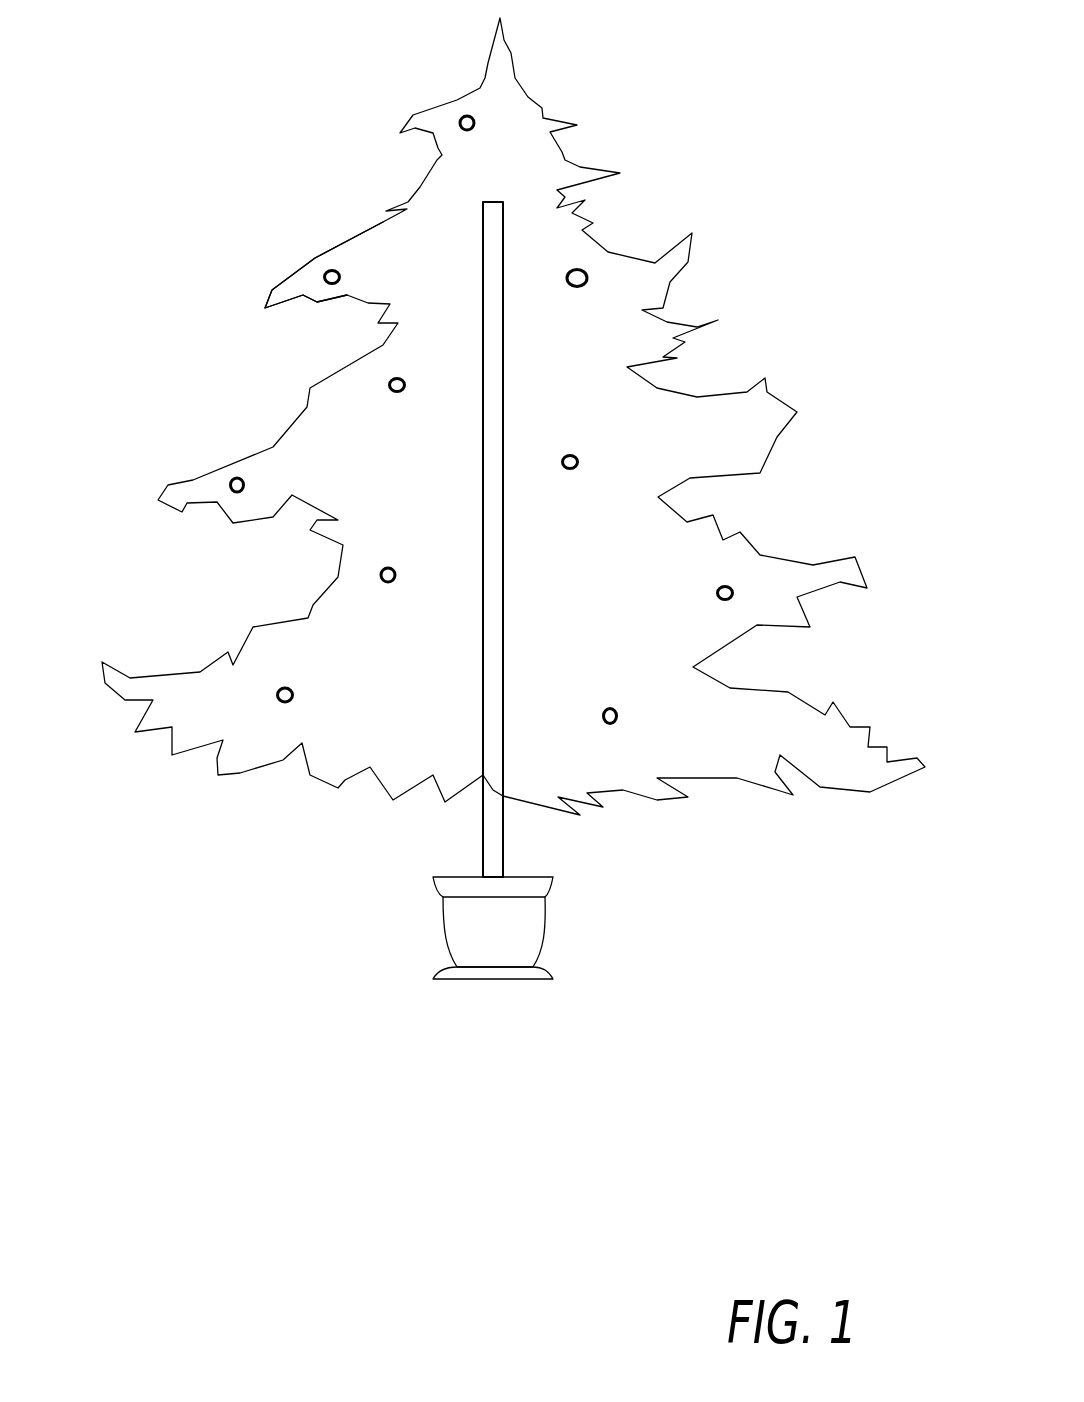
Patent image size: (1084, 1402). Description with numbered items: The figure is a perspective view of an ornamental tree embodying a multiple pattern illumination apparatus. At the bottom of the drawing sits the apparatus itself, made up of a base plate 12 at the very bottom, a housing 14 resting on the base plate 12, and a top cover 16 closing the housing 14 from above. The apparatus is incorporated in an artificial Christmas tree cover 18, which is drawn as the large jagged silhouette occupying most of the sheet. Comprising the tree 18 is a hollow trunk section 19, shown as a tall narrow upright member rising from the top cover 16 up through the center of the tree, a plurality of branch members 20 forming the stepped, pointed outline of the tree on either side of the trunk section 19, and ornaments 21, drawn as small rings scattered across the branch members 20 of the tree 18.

The base plate 12 is at (553, 975).
The housing 14 is at (548, 928).
The top cover 16 is at (443, 888).
The artificial Christmas tree cover 18 is at (312, 605).
The hollow trunk section 19 is at (483, 845).
The branch members 20 is at (265, 304).
The ornaments 21 is at (585, 272).